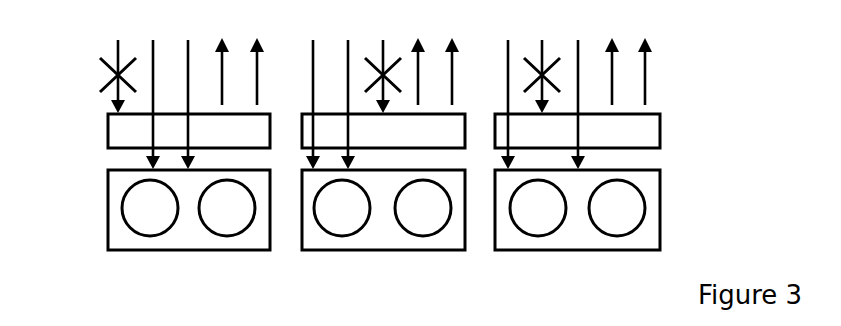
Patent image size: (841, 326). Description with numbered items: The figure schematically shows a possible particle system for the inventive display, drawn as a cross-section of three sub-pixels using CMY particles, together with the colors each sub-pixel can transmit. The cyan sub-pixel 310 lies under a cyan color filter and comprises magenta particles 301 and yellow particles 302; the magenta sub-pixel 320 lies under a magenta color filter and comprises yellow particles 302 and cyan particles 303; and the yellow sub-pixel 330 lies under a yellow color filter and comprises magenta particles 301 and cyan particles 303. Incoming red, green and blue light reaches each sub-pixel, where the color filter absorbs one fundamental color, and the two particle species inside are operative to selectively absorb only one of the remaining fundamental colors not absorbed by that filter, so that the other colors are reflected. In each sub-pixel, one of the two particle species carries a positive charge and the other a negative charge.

The magenta particles 301 is at (125, 214).
The yellow particles 302 is at (240, 218).
The cyan particles 303 is at (437, 216).
The cyan sub-pixel 310 is at (160, 260).
The magenta sub-pixel 320 is at (347, 256).
The yellow sub-pixel 330 is at (576, 256).